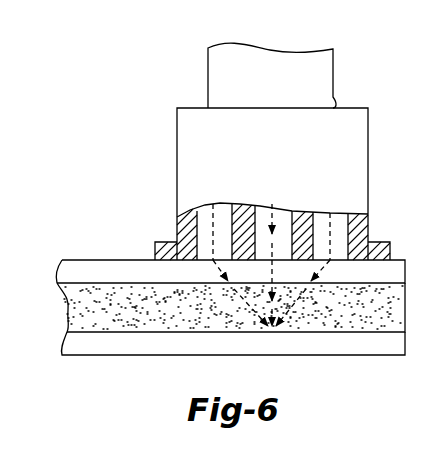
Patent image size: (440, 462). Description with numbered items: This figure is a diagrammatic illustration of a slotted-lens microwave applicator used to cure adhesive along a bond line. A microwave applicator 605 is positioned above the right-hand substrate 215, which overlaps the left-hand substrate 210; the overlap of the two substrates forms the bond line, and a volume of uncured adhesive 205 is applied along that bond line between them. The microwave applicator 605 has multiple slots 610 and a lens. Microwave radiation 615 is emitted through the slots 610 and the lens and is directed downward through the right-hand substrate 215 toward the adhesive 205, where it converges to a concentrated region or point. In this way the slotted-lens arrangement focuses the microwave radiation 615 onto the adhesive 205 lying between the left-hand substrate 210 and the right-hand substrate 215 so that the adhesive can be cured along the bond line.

The microwave applicator 605 is at (144, 107).
The slots 610 is at (320, 218).
The microwave radiation 615 is at (291, 304).
The right-hand substrate 215 is at (110, 268).
The uncured adhesive 205 is at (90, 310).
The left-hand substrate 210 is at (88, 347).